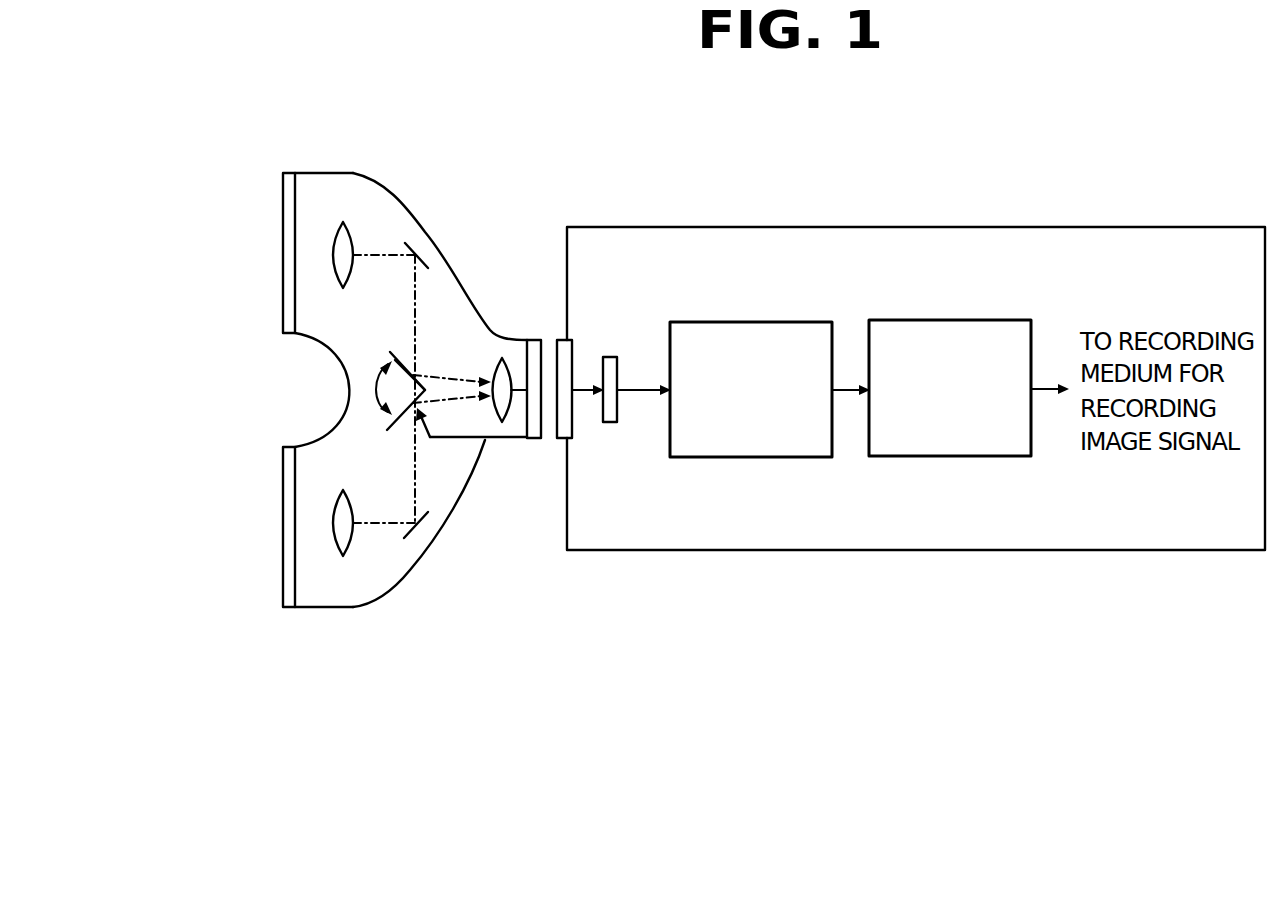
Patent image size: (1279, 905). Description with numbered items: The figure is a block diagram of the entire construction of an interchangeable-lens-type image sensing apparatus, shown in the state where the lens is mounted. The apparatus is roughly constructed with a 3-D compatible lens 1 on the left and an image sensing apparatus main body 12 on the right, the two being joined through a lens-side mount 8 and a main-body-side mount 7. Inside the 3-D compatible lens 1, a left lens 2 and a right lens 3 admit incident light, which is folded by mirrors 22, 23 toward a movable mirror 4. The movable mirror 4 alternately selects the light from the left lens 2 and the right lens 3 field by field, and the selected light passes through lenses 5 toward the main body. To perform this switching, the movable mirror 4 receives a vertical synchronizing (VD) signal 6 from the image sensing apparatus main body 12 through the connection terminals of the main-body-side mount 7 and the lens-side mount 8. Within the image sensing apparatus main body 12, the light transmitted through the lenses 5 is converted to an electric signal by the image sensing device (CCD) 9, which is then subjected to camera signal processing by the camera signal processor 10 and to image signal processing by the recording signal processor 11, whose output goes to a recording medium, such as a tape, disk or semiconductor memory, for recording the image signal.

The 3-D compatible lens 1 is at (437, 702).
The left lens 2 is at (345, 556).
The right lens 3 is at (344, 222).
The movable mirror 4 is at (390, 352).
The lenses 5 is at (503, 357).
The vertical synchronizing (VD) signal 6 is at (463, 440).
The main-body-side mount 7 is at (570, 340).
The lens-side mount 8 is at (535, 438).
The image sensing device (CCD) 9 is at (610, 422).
The camera signal processor 10 is at (768, 322).
The recording signal processor 11 is at (972, 320).
The image sensing apparatus main body 12 is at (797, 702).
The mirror 22 is at (416, 546).
The mirror 23 is at (426, 240).